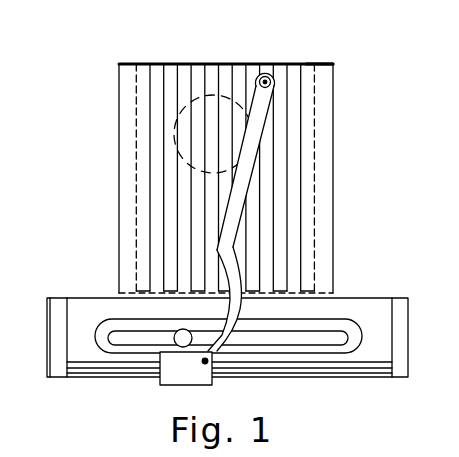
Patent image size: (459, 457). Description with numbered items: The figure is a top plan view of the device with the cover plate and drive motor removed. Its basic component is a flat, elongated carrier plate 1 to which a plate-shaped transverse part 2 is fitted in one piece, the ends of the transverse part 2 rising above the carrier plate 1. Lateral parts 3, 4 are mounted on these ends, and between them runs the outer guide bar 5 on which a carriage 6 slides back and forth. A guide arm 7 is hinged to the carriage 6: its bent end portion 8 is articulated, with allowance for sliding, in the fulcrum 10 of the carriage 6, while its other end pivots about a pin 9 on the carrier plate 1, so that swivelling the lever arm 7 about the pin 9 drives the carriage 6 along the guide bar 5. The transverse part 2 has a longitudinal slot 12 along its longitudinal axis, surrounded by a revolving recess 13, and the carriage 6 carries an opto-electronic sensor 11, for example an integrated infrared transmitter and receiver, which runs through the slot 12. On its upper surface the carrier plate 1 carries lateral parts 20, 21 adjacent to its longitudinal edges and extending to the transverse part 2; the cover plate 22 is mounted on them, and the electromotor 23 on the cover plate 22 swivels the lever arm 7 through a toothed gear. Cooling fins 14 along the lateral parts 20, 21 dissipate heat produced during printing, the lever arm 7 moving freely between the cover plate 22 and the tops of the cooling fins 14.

The carrier plate 1 is at (325, 97).
The plate-shaped transverse part 2 is at (366, 305).
The lateral part 3 is at (404, 318).
The lateral part 4 is at (58, 320).
The guide bar 5 is at (97, 366).
The carriage 6 is at (212, 384).
The guide arm 7 is at (247, 116).
The bent end portion 8 is at (236, 287).
The pin 9 is at (275, 68).
The fulcrum 10 is at (203, 363).
The opto-electronic sensor 11 is at (176, 334).
The longitudinal slot 12 is at (318, 342).
The revolving recess 13 is at (358, 341).
The cooling fins 14 is at (190, 65).
The lateral part 20 is at (143, 65).
The lateral part 21 is at (313, 65).
The cover plate 22 is at (317, 186).
The electromotor 23 is at (178, 118).